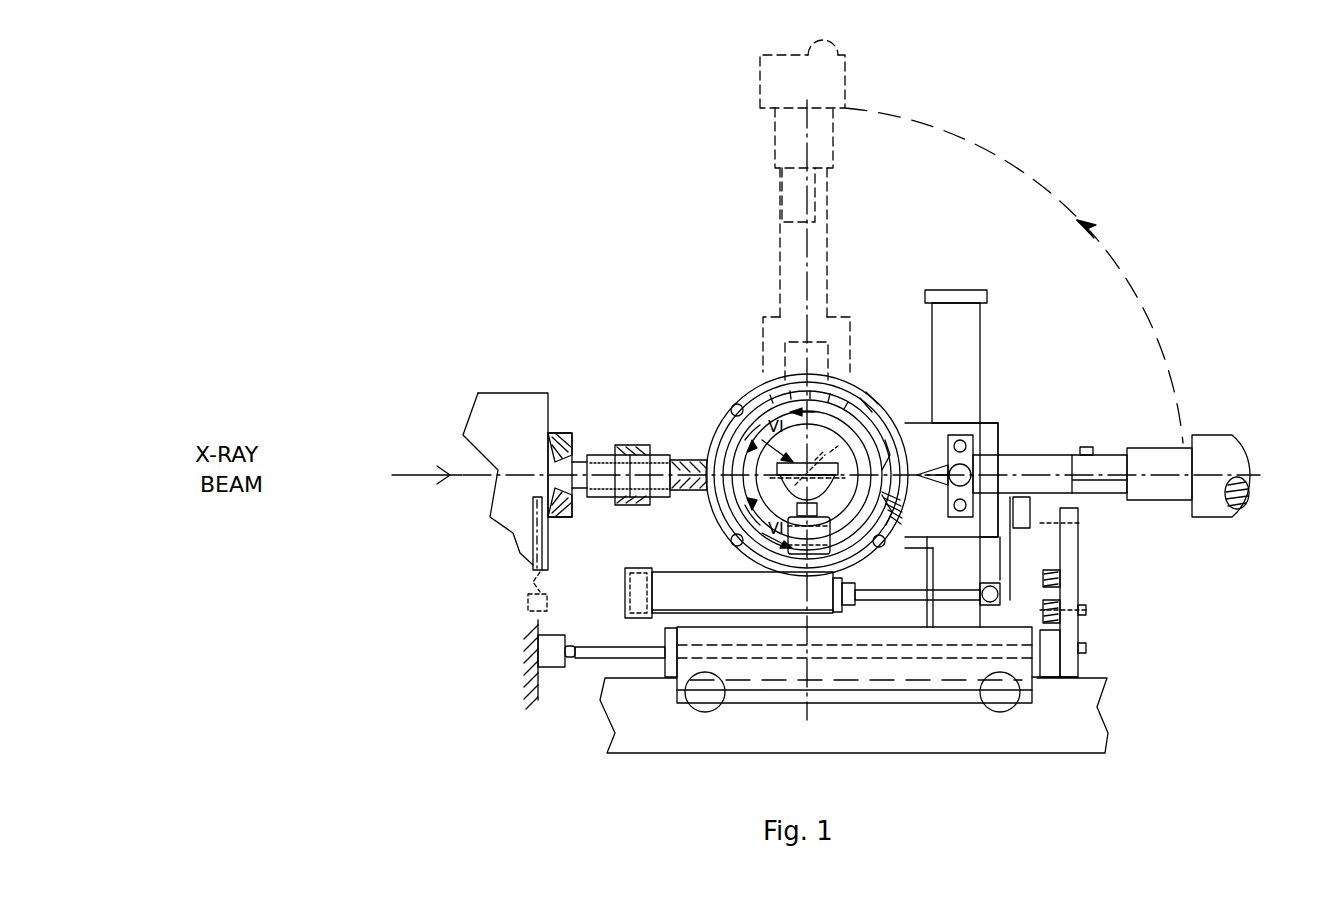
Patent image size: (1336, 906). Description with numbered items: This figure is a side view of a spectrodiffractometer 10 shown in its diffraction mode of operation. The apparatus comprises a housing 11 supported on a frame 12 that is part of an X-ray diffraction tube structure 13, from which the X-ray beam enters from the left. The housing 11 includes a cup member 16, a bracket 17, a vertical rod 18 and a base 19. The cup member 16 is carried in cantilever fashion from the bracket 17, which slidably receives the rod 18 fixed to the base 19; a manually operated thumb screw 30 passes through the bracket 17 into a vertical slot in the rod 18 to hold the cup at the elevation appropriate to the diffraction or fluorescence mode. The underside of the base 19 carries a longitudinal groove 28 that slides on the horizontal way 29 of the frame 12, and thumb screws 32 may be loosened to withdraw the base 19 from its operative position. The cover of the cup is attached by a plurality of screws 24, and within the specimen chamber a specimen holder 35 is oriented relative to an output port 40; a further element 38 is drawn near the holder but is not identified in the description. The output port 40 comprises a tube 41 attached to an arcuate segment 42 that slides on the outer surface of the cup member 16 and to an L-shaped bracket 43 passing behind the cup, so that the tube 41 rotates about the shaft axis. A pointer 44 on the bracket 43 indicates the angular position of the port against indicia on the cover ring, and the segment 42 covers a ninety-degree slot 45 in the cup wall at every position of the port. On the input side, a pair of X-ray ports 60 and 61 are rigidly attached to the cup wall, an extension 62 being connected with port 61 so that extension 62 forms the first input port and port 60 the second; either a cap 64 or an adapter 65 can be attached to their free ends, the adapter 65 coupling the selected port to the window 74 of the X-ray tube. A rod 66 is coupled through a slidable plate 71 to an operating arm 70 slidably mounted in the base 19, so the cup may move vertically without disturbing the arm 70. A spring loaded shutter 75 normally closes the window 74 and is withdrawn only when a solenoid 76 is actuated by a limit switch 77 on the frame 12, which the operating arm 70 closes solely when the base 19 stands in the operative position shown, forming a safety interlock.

The spectrodiffractometer 10 is at (680, 266).
The housing 11 is at (990, 416).
The frame 12 is at (521, 694).
The X-ray diffraction tube structure 13 is at (505, 388).
The cup member 16 is at (740, 379).
The bracket 17 is at (1000, 429).
The rod 18 is at (975, 326).
The base 19 is at (873, 703).
The screws 24 is at (757, 535).
The longitudinal groove 28 is at (830, 686).
The horizontal way 29 is at (1085, 717).
The thumb screw 30 is at (1015, 528).
The thumb screws 32 is at (707, 712).
The specimen holder 35 is at (788, 458).
The inner ring 38 is at (770, 500).
The output port 40 is at (1104, 510).
The tube 41 is at (1042, 452).
The arcuate segment 42 is at (885, 398).
The L-shaped bracket 43 is at (912, 505).
The pointer 44 is at (931, 464).
The slot 45 is at (884, 438).
The X-ray port 60 is at (664, 500).
The X-ray port 61 is at (800, 545).
The extension 62 is at (665, 612).
The cap 64 is at (624, 588).
The adapter 65 is at (600, 454).
The rod 66 is at (1008, 596).
The operating arm 70 is at (620, 652).
The slidable plate 71 is at (1042, 579).
The window 74 is at (555, 432).
The shutter 75 is at (532, 553).
The solenoid 76 is at (525, 620).
The limit switch 77 is at (548, 661).